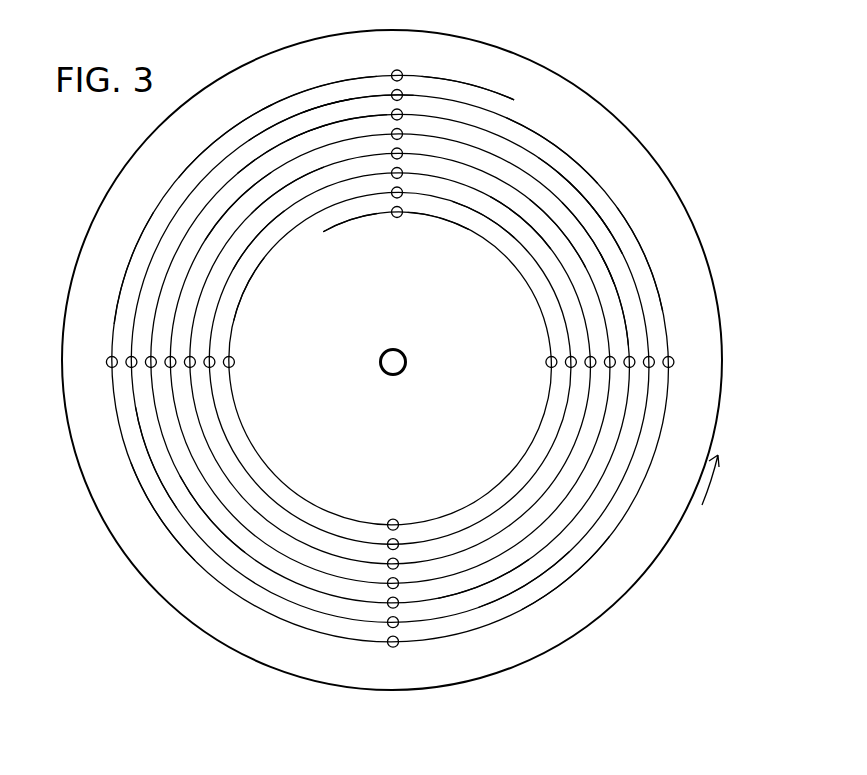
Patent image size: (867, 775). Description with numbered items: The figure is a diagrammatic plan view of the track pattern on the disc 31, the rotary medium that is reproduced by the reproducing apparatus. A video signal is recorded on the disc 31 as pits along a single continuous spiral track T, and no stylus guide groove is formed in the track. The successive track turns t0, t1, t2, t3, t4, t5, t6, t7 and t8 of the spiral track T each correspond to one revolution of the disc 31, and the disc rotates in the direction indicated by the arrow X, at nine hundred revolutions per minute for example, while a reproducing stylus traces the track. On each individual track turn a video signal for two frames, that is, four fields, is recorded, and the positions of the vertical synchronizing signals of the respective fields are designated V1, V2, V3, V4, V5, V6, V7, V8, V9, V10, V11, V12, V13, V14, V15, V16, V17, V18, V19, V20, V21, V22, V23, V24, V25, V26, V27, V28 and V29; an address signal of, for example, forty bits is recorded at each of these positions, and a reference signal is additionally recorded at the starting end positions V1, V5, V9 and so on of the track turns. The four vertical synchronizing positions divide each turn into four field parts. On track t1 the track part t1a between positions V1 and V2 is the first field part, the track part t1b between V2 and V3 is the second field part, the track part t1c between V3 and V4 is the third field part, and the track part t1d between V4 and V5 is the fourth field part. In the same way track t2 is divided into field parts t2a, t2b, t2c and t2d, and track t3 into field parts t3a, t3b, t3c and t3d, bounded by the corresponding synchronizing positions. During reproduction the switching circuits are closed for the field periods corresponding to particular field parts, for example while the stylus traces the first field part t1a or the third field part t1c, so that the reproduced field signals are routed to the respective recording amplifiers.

The disc 31 is at (606, 88).
The arrow indicating rotation direction X is at (722, 480).
The spiral track T is at (220, 135).
The track turn t0 is at (480, 90).
The track turn t1 is at (317, 83).
The track turn t2 is at (358, 98).
The track turn t3 is at (280, 143).
The track turn t4 is at (232, 200).
The track turn t5 is at (286, 188).
The track turn t6 is at (256, 238).
The track turn t7 is at (246, 288).
The track turn t8 is at (347, 223).
The first field part of track t1 t1a is at (135, 263).
The first field part of track t2 t2a is at (298, 115).
The first field part of track t3 t3a is at (335, 120).
The second field part of track t1 t1b is at (158, 515).
The second field part of track t2 t2b is at (150, 460).
The second field part of track t3 t3b is at (208, 518).
The third field part of track t1 t1c is at (569, 577).
The third field part of track t2 t2c is at (527, 585).
The third field part of track t3 t3c is at (487, 587).
The fourth field part of track t1 t1d is at (645, 257).
The fourth field part of track t2 t2d is at (593, 210).
The fourth field part of track t3 t3d is at (617, 298).
The vertical synchronizing signal position V1 is at (403, 71).
The vertical synchronizing signal position V2 is at (106, 358).
The vertical synchronizing signal position V3 is at (389, 646).
The vertical synchronizing signal position V4 is at (674, 358).
The vertical synchronizing signal position V5 is at (403, 94).
The vertical synchronizing signal position V6 is at (126, 366).
The vertical synchronizing signal position V7 is at (388, 620).
The vertical synchronizing signal position V8 is at (653, 367).
The vertical synchronizing signal position V9 is at (403, 113).
The vertical synchronizing signal position V10 is at (147, 358).
The vertical synchronizing signal position V11 is at (388, 601).
The vertical synchronizing signal position V12 is at (634, 358).
The vertical synchronizing signal position V13 is at (403, 133).
The vertical synchronizing signal position V14 is at (166, 367).
The vertical synchronizing signal position V15 is at (388, 581).
The vertical synchronizing signal position V16 is at (605, 358).
The vertical synchronizing signal position V17 is at (403, 152).
The vertical synchronizing signal position V18 is at (195, 358).
The vertical synchronizing signal position V19 is at (388, 562).
The vertical synchronizing signal position V20 is at (585, 368).
The vertical synchronizing signal position V21 is at (403, 172).
The vertical synchronizing signal position V22 is at (214, 367).
The vertical synchronizing signal position V23 is at (388, 542).
The vertical synchronizing signal position V24 is at (566, 368).
The vertical synchronizing signal position V25 is at (403, 191).
The vertical synchronizing signal position V26 is at (235, 361).
The vertical synchronizing signal position V27 is at (396, 520).
The vertical synchronizing signal position V28 is at (545, 362).
The vertical synchronizing signal position V29 is at (397, 218).